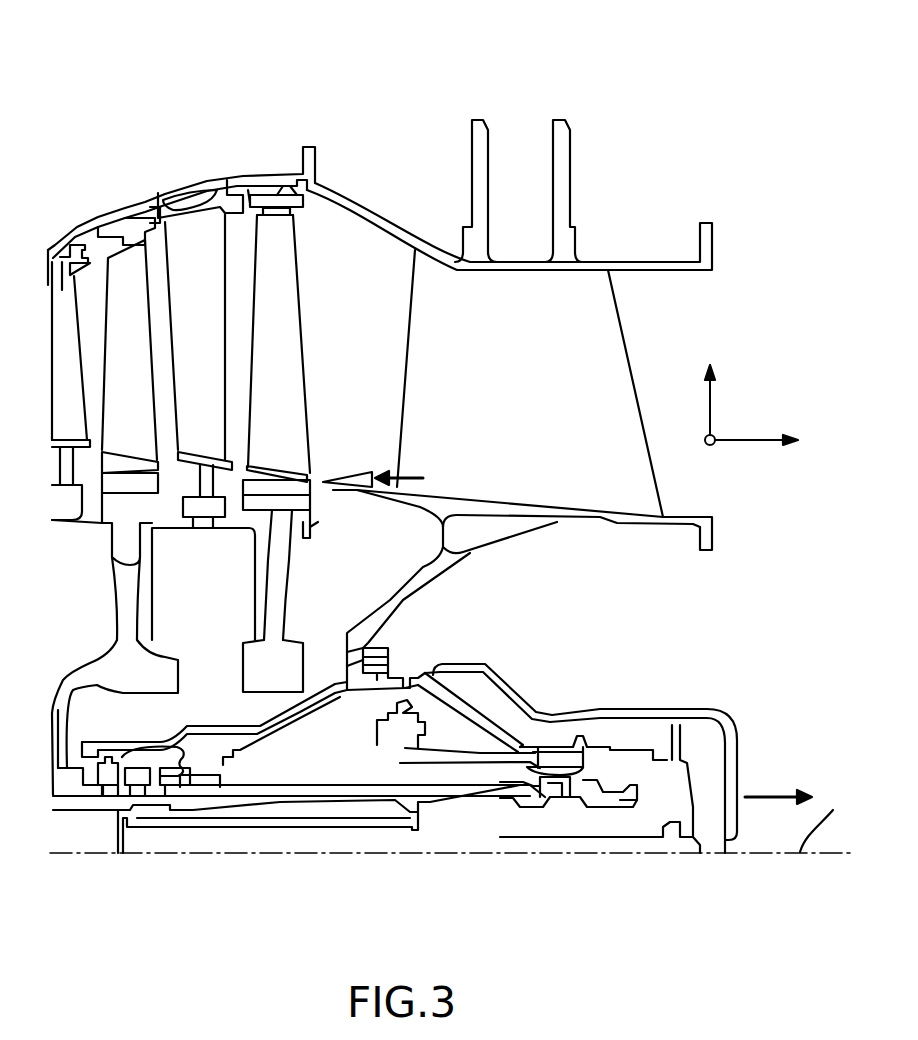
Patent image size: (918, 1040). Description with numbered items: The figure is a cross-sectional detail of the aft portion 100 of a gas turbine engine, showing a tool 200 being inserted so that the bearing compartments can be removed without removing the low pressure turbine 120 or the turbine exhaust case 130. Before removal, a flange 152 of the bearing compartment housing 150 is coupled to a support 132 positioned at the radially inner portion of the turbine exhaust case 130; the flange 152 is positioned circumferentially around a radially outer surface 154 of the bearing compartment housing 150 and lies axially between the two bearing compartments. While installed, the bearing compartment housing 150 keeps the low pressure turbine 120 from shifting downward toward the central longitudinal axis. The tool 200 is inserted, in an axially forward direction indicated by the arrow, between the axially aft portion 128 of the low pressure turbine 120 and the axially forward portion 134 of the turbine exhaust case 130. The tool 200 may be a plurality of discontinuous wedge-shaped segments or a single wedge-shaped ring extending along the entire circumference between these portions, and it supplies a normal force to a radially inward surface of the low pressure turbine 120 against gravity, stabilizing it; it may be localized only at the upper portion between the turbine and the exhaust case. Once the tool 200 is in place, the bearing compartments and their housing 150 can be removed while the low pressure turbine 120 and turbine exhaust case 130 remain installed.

The aft portion 100 is at (104, 42).
The low pressure turbine 120 is at (152, 195).
The turbine exhaust case 130 is at (387, 224).
The axially aft portion 128 is at (310, 482).
The tool 200 is at (343, 472).
The axially forward portion 134 is at (345, 492).
The support 132 is at (397, 600).
The flange 152 is at (393, 650).
The radially outer surface 154 is at (527, 690).
The bearing compartment housing 150 is at (640, 708).